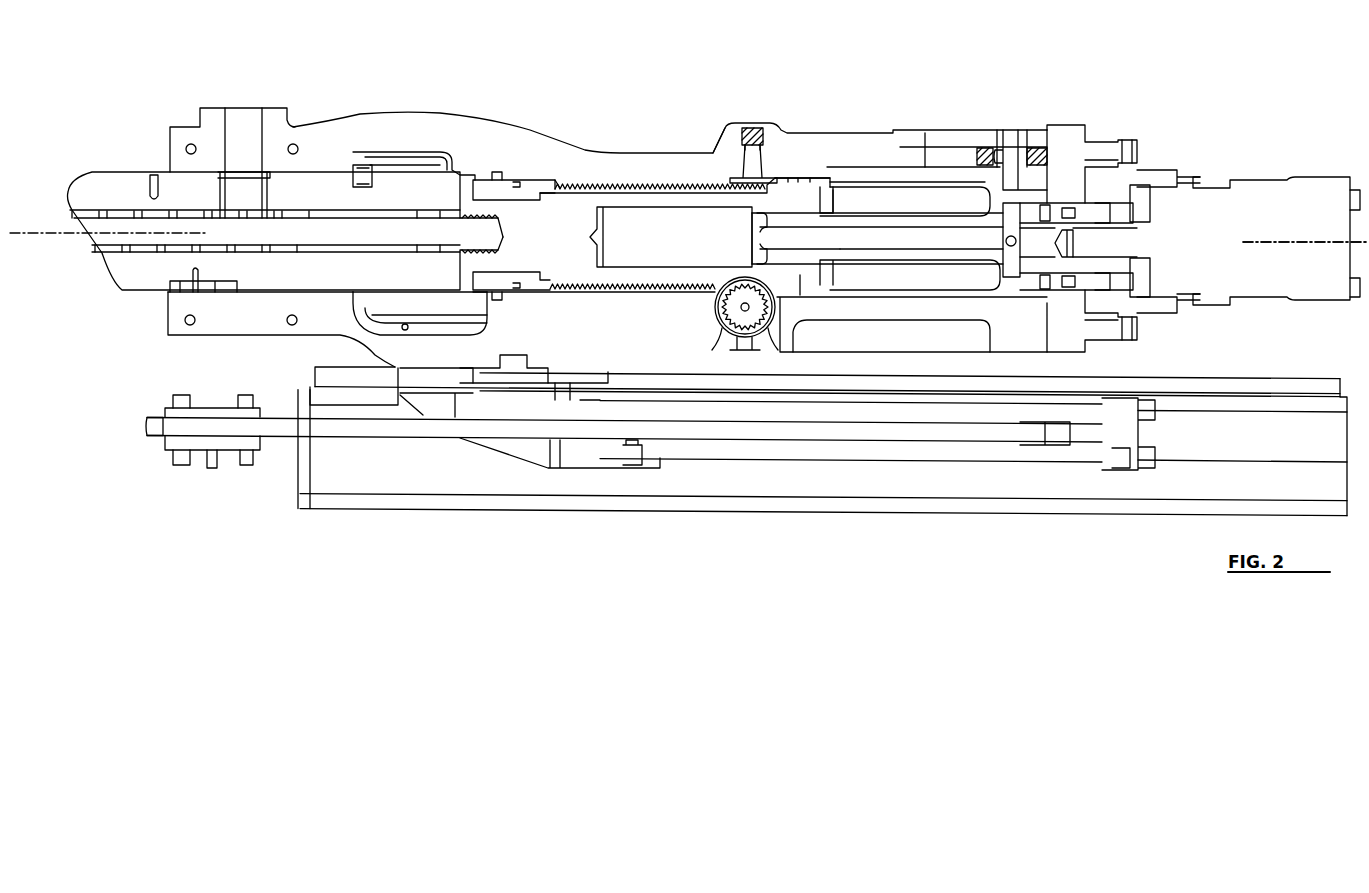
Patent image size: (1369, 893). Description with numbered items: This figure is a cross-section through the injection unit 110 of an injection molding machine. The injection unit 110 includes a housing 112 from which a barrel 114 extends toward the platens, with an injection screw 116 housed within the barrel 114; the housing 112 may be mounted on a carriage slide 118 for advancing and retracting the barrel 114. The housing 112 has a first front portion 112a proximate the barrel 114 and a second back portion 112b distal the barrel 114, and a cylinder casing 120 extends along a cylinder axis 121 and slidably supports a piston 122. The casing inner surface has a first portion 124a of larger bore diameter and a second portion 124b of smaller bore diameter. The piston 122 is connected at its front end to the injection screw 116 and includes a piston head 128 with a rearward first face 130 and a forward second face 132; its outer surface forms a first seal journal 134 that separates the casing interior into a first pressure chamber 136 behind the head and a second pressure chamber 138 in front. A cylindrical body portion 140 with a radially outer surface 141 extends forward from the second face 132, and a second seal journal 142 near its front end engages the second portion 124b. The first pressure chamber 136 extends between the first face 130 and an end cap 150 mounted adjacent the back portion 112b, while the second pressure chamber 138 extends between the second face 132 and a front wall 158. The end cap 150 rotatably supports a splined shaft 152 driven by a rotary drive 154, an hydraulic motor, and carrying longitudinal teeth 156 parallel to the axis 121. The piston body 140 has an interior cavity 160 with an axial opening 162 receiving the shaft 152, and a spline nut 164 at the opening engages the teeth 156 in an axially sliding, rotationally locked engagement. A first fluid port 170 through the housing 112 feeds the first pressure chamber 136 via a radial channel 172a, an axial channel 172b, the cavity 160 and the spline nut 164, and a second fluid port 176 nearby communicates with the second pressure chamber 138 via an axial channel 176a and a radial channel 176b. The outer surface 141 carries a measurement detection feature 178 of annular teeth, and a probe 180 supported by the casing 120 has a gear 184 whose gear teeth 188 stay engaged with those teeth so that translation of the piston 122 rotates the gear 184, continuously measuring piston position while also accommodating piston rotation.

The injection unit 110 is at (623, 68).
The housing 112 is at (503, 133).
The first (front) portion of the housing 112a is at (218, 104).
The second (back) portion of the housing 112b is at (1053, 103).
The barrel 114 is at (152, 277).
The injection screw 116 is at (347, 238).
The carriage slide 118 is at (1058, 490).
The cylinder casing 120 is at (950, 140).
The cylinder axis 121 is at (1268, 242).
The piston 122 is at (557, 235).
The first portion of the inner cylindrical surface 124a is at (940, 300).
The second portion of the inner cylindrical surface 124b is at (577, 272).
The piston head 128 is at (820, 187).
The first face 130 is at (861, 203).
The second face 132 is at (752, 215).
The first seal journal 134 is at (790, 178).
The first pressure chamber 136 is at (905, 199).
The second pressure chamber 138 is at (730, 180).
The cylindrical body portion 140 is at (640, 193).
The radially outer surface of the piston body 141 is at (586, 289).
The second seal journal 142 is at (557, 180).
The end cap 150 is at (1070, 140).
The splined shaft 152 is at (912, 262).
The rotary drive 154 is at (1252, 200).
The longitudinal teeth 156 is at (915, 266).
The front wall 158 is at (573, 190).
The interior cavity 160 is at (657, 246).
The axial opening 162 is at (843, 268).
The spline nut 164 is at (752, 246).
The first fluid port 170 is at (1005, 143).
The radial channel 172a is at (1012, 228).
The axial channel 172b is at (877, 238).
The second fluid port 176 is at (943, 133).
The axial channel 176a is at (877, 153).
The radial channel 176b is at (748, 150).
The measurement detection feature 178 is at (607, 293).
The probe 180 is at (713, 321).
The gear 184 is at (783, 323).
The gear teeth 188 is at (725, 340).